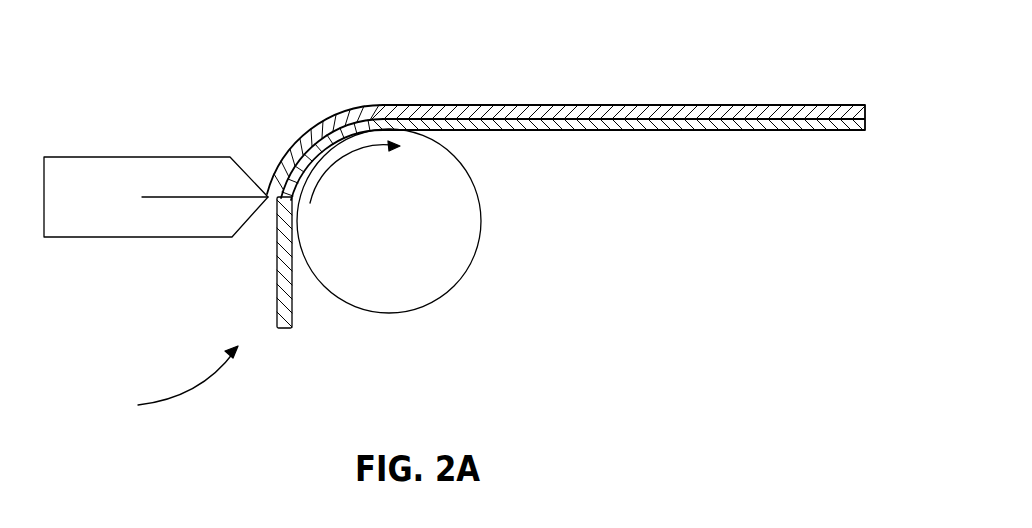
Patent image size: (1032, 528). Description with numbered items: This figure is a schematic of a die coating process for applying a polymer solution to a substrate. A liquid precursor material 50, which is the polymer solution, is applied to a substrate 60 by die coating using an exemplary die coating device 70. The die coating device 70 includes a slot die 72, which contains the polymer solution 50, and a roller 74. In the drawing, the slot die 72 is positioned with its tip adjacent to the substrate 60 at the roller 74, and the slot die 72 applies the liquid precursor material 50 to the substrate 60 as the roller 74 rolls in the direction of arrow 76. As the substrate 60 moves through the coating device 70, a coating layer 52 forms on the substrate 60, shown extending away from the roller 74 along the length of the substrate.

The liquid precursor material 50 is at (183, 197).
The coating layer 52 is at (587, 105).
The substrate 60 is at (292, 312).
The die coating device 70 is at (174, 382).
The slot die 72 is at (122, 237).
The roller 74 is at (470, 268).
The arrow 76 is at (343, 162).